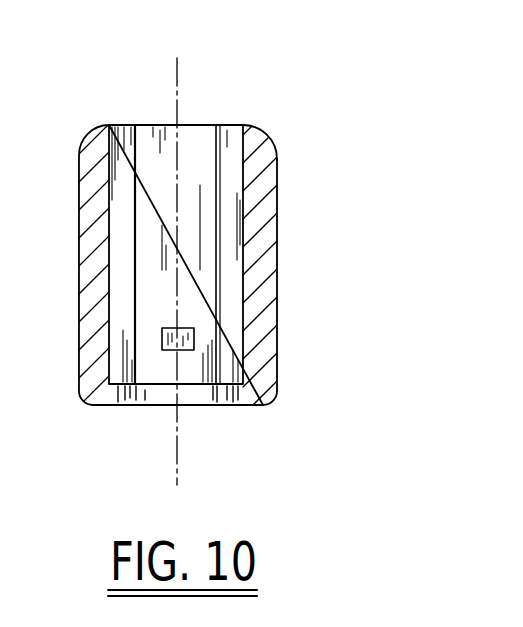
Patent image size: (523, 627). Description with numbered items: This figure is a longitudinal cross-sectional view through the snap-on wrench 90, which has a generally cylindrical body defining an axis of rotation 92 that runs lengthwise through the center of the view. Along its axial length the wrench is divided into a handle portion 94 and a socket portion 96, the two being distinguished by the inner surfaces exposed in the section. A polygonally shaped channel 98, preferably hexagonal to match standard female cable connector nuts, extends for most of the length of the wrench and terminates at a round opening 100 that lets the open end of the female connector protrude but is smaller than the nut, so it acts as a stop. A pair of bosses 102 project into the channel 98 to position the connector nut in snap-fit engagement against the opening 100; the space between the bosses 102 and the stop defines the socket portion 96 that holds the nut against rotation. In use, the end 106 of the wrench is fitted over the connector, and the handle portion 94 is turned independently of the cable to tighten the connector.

The snap-on wrench 90 is at (116, 98).
The axis of rotation 92 is at (177, 93).
The handle portion 94 is at (283, 253).
The socket portion 96 is at (286, 358).
The polygonally shaped channel 98 is at (150, 221).
The round opening 100 is at (224, 404).
The bosses 102 is at (177, 352).
The end of the wrench 106 is at (243, 124).